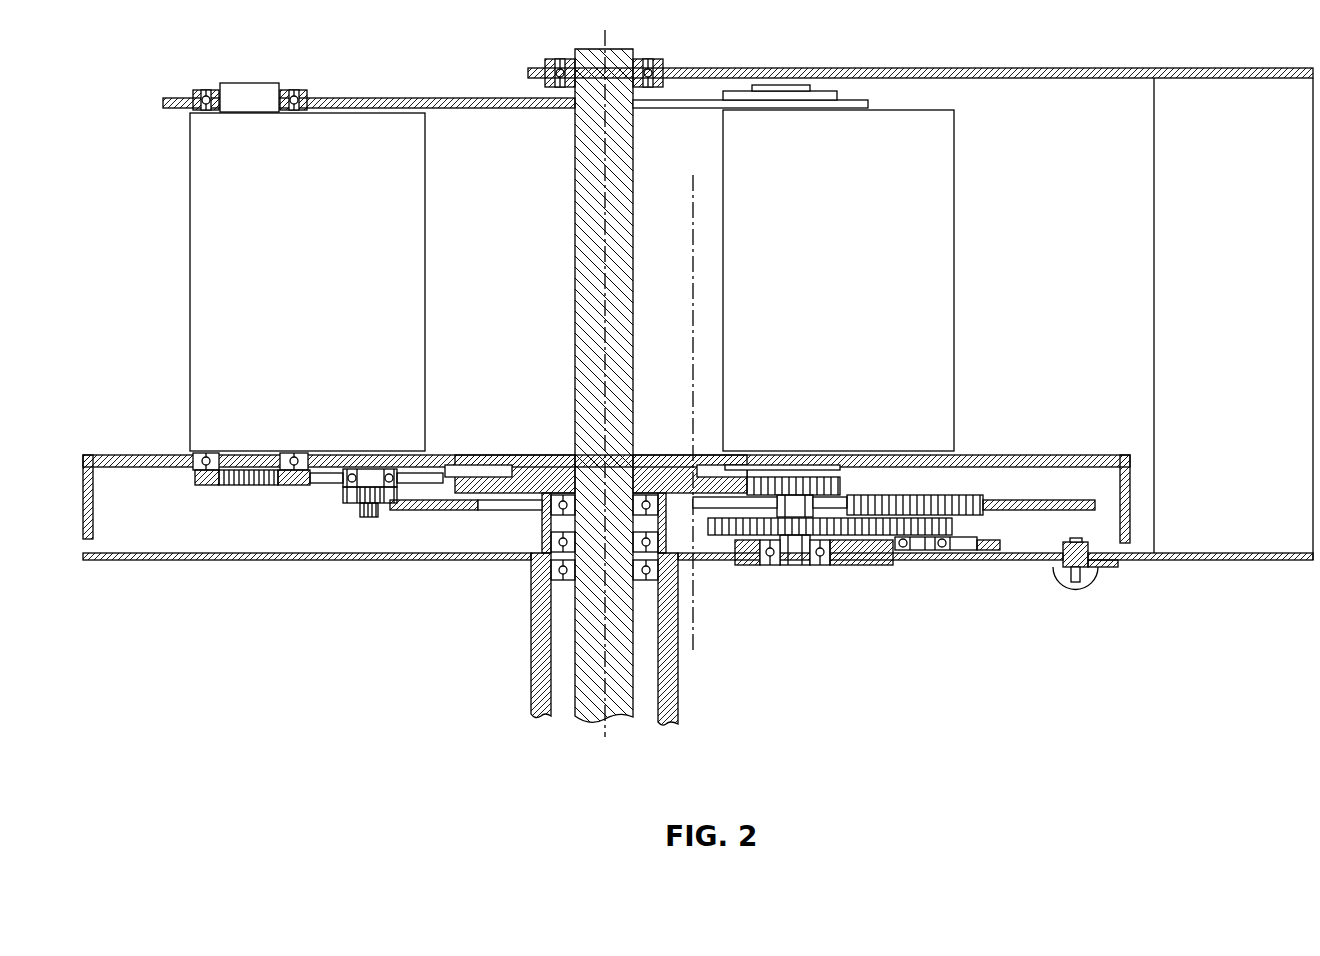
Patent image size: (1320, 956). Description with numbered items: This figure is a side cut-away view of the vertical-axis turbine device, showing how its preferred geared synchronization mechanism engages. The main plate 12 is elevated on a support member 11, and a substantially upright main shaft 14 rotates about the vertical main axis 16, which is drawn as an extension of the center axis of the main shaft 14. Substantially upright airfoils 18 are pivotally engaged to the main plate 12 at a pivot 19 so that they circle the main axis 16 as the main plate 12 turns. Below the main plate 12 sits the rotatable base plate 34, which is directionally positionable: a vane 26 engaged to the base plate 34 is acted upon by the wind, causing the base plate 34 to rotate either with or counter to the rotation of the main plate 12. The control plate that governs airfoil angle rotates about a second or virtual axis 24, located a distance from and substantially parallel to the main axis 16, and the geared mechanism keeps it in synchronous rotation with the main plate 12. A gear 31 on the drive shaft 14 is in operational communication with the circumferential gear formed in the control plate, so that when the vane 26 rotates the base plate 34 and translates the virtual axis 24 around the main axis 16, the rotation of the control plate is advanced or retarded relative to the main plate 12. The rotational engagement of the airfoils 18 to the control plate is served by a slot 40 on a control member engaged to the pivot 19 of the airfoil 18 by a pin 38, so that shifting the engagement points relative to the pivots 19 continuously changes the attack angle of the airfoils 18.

The support member 11 is at (541, 658).
The main plate 12 is at (112, 455).
The main shaft 14 is at (594, 705).
The main axis 16 is at (600, 208).
The airfoil 18 is at (200, 292).
The pivot 19 is at (243, 486).
The virtual axis 24 is at (694, 608).
The vane 26 is at (1167, 305).
The gear 31 is at (865, 528).
The base plate 34 is at (208, 561).
The pin 38 is at (375, 472).
The slot 40 is at (320, 484).